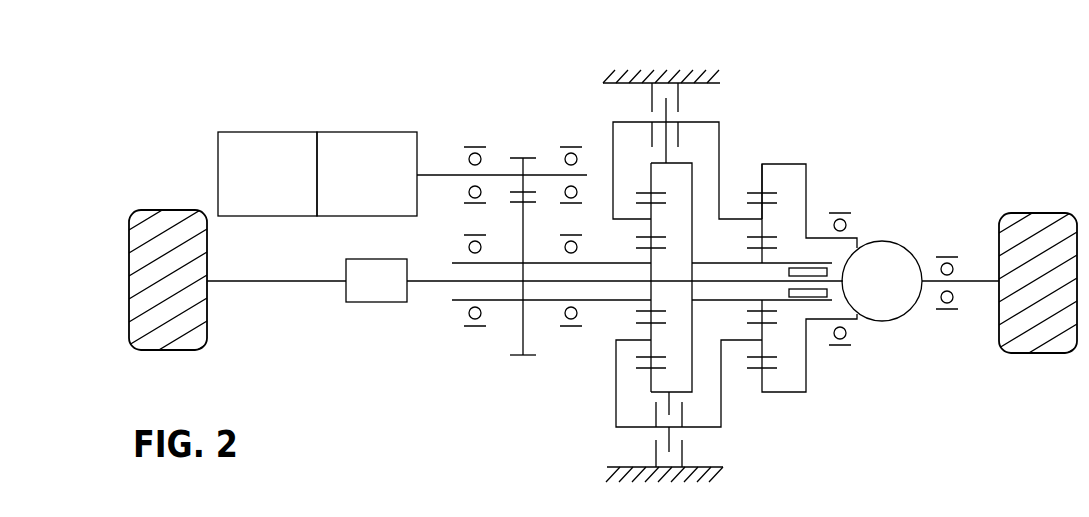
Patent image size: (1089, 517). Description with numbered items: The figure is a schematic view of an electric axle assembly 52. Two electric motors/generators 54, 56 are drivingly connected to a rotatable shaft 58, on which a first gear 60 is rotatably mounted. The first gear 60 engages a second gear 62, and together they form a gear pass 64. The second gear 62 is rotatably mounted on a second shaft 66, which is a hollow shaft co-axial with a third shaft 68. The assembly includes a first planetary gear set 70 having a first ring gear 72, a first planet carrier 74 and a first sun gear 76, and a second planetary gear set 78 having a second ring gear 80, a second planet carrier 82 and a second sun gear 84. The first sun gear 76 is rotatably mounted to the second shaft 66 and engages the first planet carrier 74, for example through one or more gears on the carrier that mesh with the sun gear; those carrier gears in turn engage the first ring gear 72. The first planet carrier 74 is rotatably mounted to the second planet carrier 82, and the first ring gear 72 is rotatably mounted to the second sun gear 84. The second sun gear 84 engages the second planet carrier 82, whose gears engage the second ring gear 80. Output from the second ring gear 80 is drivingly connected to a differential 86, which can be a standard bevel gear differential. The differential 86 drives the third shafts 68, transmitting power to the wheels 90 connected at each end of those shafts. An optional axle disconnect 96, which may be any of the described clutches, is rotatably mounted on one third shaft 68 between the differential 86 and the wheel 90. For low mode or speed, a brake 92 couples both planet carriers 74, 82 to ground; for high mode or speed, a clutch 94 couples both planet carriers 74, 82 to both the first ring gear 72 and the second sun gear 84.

The electric axle assembly 52 is at (168, 128).
The electric motor/generator 54 is at (272, 132).
The electric motor/generator 56 is at (368, 132).
The rotatable shaft 58 is at (440, 175).
The first gear 60 is at (518, 158).
The second gear 62 is at (520, 356).
The gear pass 64 is at (506, 204).
The second shaft 66 is at (456, 300).
The third shaft 68 is at (422, 285).
The first planetary gear set 70 is at (602, 352).
The first ring gear 72 is at (651, 193).
The first planet carrier 74 is at (616, 390).
The first sun gear 76 is at (638, 311).
The second planetary gear set 78 is at (824, 157).
The second ring gear 80 is at (765, 164).
The second planet carrier 82 is at (768, 217).
The second sun gear 84 is at (778, 263).
The differential 86 is at (892, 246).
The wheel 90 is at (168, 210).
The brake 92 is at (676, 52).
The clutch 94 is at (692, 152).
The axle disconnect 96 is at (378, 302).